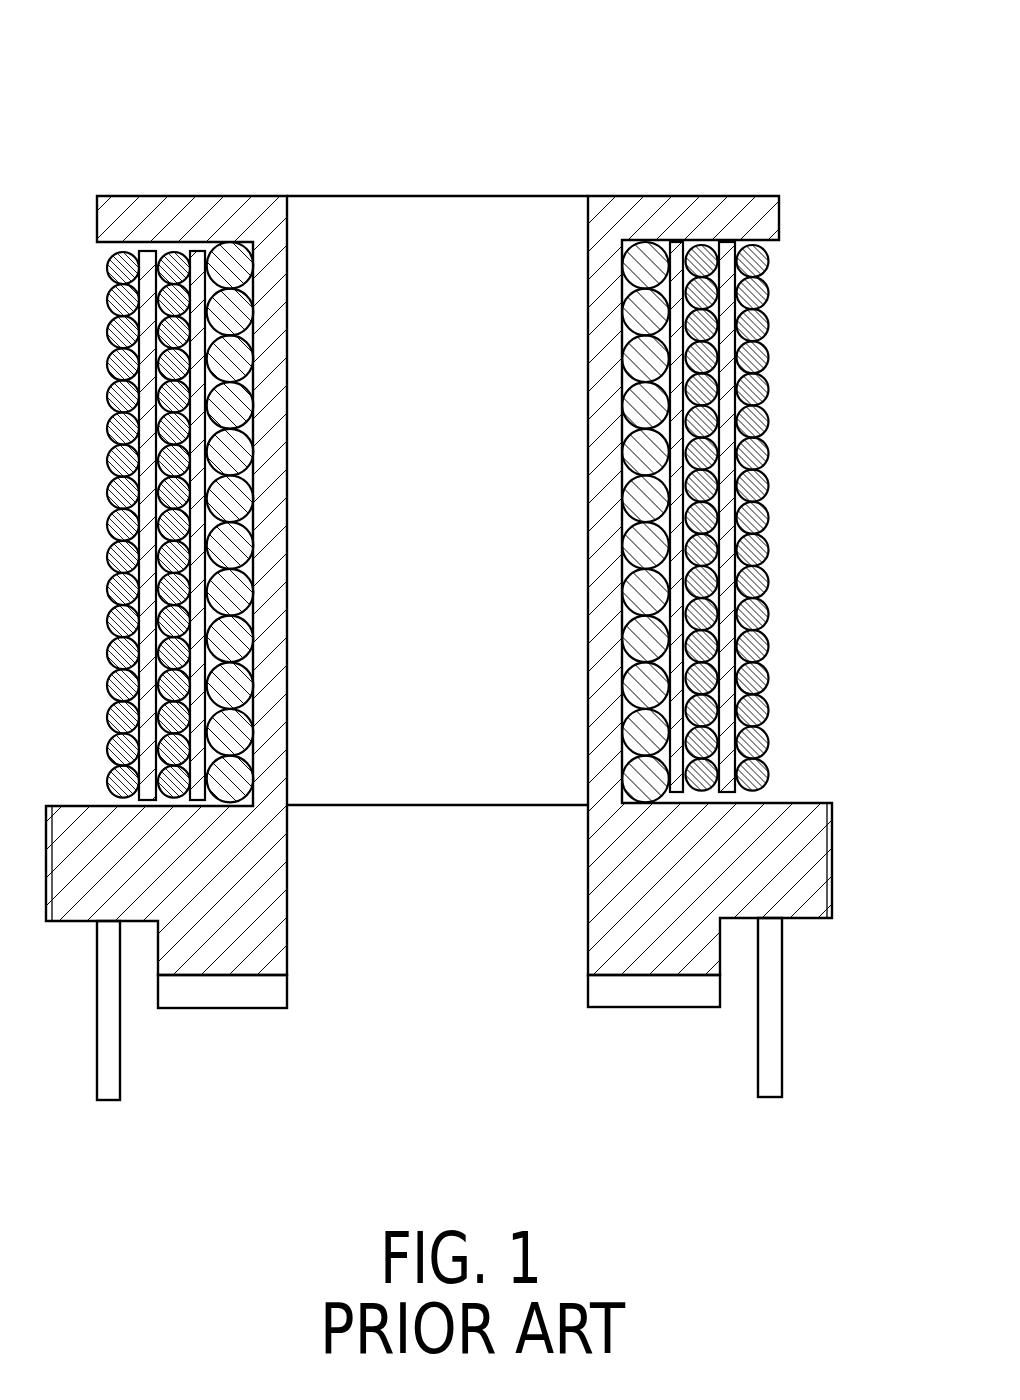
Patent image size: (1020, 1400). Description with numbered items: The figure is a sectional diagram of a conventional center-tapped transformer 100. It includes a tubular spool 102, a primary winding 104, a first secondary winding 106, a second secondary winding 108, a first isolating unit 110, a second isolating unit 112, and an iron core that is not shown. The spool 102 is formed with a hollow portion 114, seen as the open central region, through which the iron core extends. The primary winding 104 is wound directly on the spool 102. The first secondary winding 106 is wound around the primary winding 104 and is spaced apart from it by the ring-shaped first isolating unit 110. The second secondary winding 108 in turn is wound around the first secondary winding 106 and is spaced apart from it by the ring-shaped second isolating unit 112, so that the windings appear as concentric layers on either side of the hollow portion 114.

The center-tapped transformer 100 is at (469, 550).
The tubular spool 102 is at (147, 195).
The primary winding 104 is at (230, 262).
The first secondary winding 106 is at (705, 258).
The second secondary winding 108 is at (752, 258).
The first isolating unit 110 is at (677, 393).
The second isolating unit 112 is at (730, 519).
The hollow portion 114 is at (407, 245).